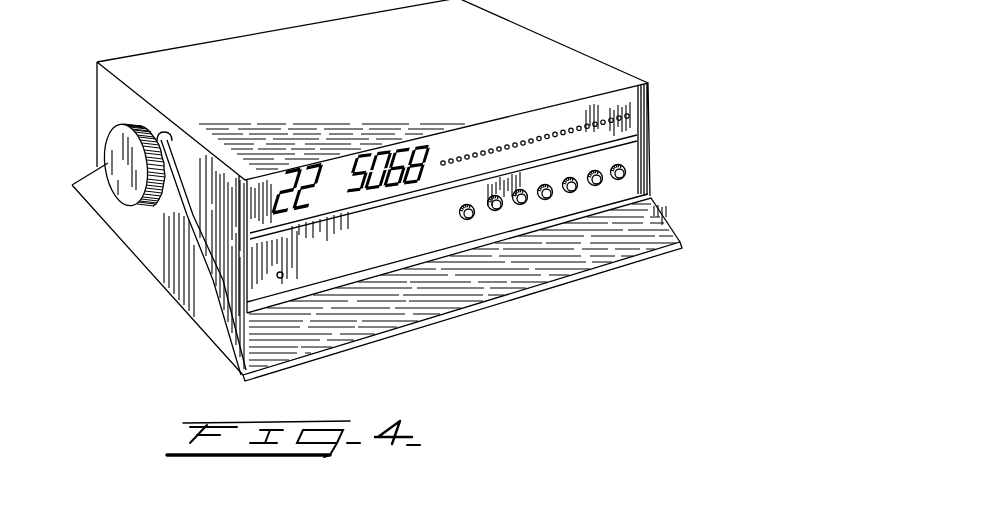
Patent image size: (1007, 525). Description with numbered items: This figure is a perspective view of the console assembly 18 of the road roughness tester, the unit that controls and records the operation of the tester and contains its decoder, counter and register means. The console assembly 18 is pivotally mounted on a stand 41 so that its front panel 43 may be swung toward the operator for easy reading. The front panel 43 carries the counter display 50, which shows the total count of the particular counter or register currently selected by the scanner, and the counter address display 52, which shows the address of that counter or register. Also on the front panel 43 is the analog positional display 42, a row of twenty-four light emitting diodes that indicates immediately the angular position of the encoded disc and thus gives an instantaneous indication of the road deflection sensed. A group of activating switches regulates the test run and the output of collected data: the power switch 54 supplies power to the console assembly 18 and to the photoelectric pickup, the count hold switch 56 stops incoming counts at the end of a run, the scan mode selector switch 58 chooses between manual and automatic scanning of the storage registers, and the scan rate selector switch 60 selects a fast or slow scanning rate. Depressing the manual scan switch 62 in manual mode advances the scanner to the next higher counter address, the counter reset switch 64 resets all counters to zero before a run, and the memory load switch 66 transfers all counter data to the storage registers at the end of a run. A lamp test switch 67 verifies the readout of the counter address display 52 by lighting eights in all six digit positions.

The console assembly 18 is at (545, 31).
The stand 41 is at (142, 243).
The analog positional display 42 is at (617, 116).
The front panel 43 is at (627, 132).
The counter display 50 is at (392, 155).
The counter address display 52 is at (282, 175).
The power switch 54 is at (473, 218).
The count hold switch 56 is at (499, 209).
The scan mode selector switch 58 is at (525, 203).
The scan rate selector switch 60 is at (551, 198).
The manual scan switch 62 is at (577, 190).
The counter reset switch 64 is at (602, 183).
The memory load switch 66 is at (626, 173).
The lamp test switch 67 is at (277, 277).